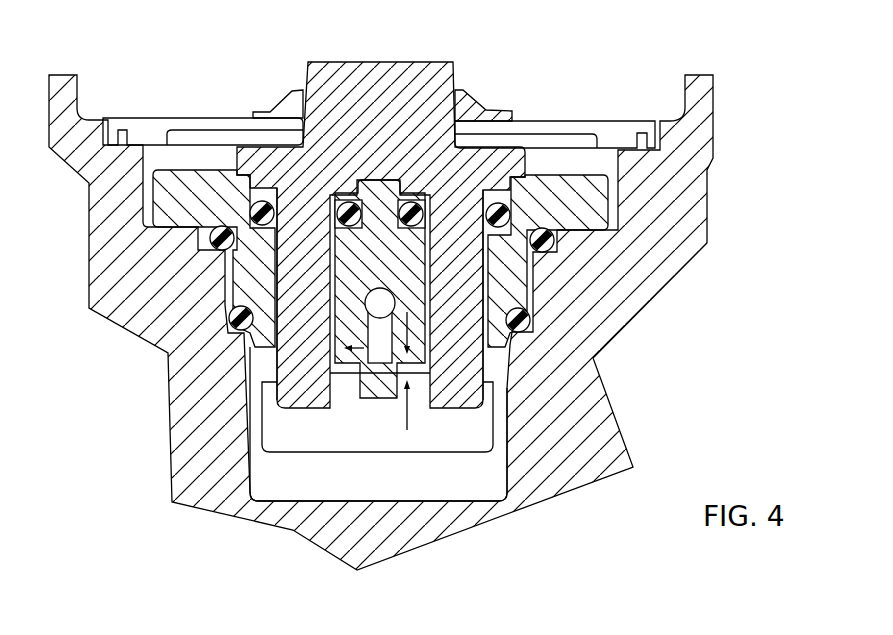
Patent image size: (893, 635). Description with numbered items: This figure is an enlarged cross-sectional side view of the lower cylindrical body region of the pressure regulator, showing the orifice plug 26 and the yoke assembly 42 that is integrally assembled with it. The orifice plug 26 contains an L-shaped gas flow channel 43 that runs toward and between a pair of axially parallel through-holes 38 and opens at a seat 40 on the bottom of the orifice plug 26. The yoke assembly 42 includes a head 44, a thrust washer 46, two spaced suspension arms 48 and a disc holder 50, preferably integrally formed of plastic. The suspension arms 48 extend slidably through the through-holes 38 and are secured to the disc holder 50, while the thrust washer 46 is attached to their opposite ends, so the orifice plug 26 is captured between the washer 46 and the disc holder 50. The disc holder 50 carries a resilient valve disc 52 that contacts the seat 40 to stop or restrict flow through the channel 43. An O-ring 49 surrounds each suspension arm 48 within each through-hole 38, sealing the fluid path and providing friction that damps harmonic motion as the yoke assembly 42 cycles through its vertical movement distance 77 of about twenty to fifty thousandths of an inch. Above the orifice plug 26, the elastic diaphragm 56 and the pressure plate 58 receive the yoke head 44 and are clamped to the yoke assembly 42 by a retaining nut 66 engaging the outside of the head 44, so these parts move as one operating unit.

The orifice plug 26 is at (563, 166).
The through-holes 38 is at (490, 284).
The seat 40 is at (358, 372).
The yoke assembly 42 is at (330, 58).
The gas flow channel 43 is at (262, 350).
The head 44 is at (385, 100).
The thrust washer 46 is at (255, 165).
The suspension arms 48 is at (270, 382).
The O-ring 49 is at (252, 212).
The disc holder 50 is at (432, 438).
The valve disc 52 is at (377, 392).
The elastic diaphragm 56 is at (605, 131).
The pressure plate 58 is at (520, 122).
The retaining nut 66 is at (467, 103).
The vertical movement distance 77 is at (410, 318).